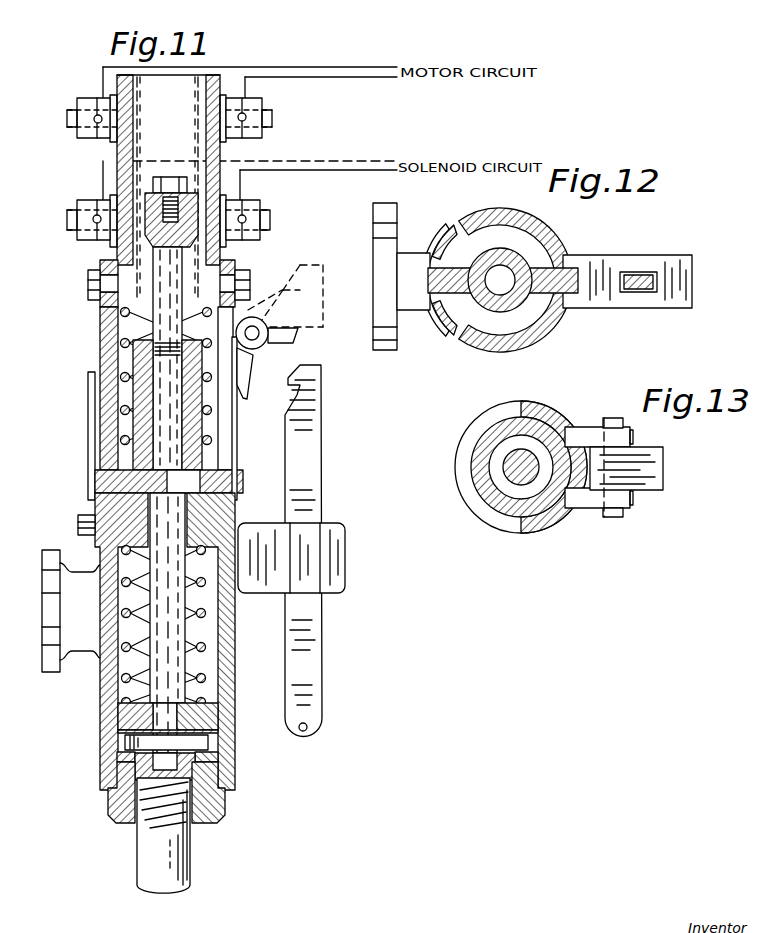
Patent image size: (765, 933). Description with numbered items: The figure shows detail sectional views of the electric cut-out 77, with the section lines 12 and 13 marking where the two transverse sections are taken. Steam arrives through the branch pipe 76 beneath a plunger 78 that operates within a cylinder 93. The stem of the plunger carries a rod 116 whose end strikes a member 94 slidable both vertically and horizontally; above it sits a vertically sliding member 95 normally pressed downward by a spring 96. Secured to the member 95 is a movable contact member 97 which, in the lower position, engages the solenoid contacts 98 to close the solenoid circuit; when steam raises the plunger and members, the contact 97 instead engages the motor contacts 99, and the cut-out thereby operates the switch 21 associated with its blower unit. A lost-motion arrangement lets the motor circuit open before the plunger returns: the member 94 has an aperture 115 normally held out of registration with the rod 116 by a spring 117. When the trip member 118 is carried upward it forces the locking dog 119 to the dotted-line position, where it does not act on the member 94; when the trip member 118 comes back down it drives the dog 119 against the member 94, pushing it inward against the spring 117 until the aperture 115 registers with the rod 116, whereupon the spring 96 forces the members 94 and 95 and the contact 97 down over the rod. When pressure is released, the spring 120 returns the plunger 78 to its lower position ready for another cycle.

In FIG. 11, the section line 12— 12 is at (95, 479).
In FIG. 11, the section line 13— 13 is at (113, 253).
In FIG. 11, the switch 21 is at (230, 197).
In FIG. 11, the branch pipe 76 is at (152, 853).
In FIG. 11, the electric cut-out 77 is at (110, 174).
In FIG. 13, the electric cut-out 77 is at (525, 534).
In FIG. 11, the plunger 78 is at (215, 707).
In FIG. 11, the cylinder 93 is at (227, 643).
In FIG. 11, the slidable member 94 is at (238, 479).
In FIG. 12, the slidable member 94 is at (565, 283).
In FIG. 11, the vertically sliding member 95 is at (198, 422).
In FIG. 11, the spring 96 is at (127, 375).
In FIG. 11, the movable contact member 97 is at (195, 193).
In FIG. 11, the solenoid contacts 98 is at (244, 219).
In FIG. 11, the motor contacts 99 is at (244, 116).
In FIG. 11, the aperture 115 is at (203, 460).
In FIG. 12, the aperture 115 is at (520, 280).
In FIG. 11, the rod 116 is at (175, 530).
In FIG. 11, the spring 117 is at (92, 393).
In FIG. 12, the spring 117 is at (432, 253).
In FIG. 11, the trip member 118 is at (315, 430).
In FIG. 12, the trip member 118 is at (643, 272).
In FIG. 11, the locking dog 119 is at (298, 335).
In FIG. 13, the locking dog 119 is at (663, 455).
In FIG. 11, the spring 120 is at (120, 682).